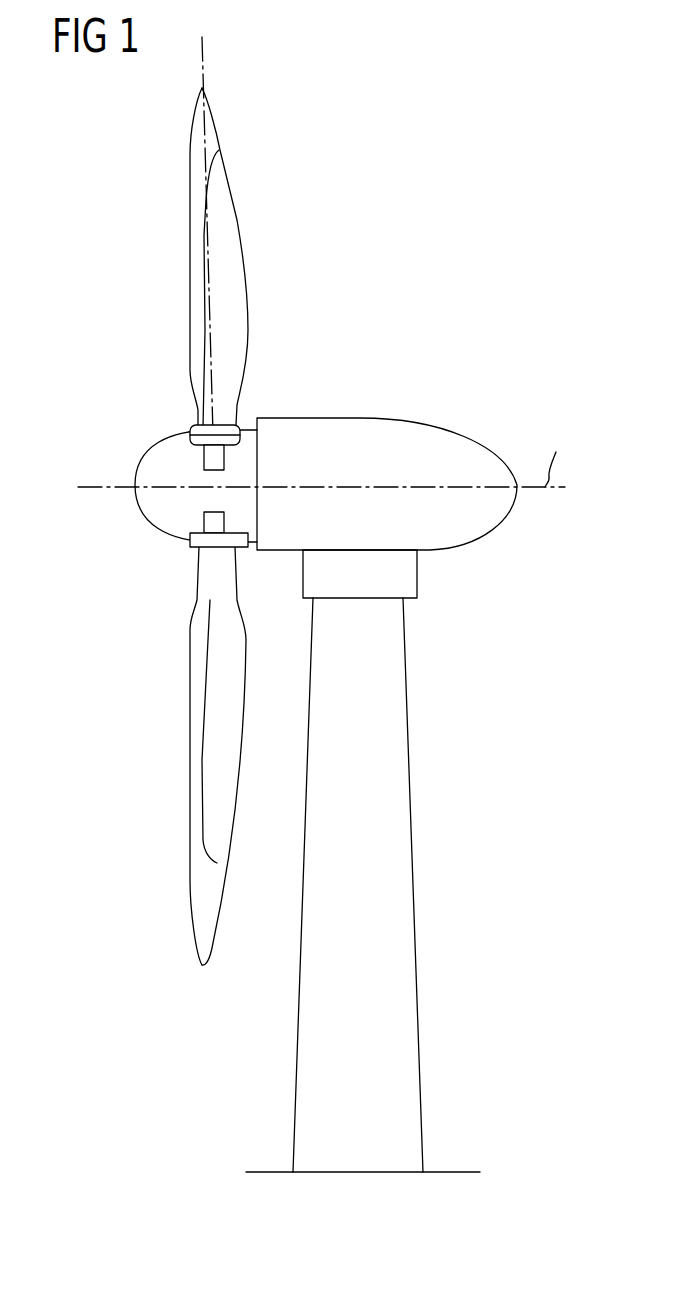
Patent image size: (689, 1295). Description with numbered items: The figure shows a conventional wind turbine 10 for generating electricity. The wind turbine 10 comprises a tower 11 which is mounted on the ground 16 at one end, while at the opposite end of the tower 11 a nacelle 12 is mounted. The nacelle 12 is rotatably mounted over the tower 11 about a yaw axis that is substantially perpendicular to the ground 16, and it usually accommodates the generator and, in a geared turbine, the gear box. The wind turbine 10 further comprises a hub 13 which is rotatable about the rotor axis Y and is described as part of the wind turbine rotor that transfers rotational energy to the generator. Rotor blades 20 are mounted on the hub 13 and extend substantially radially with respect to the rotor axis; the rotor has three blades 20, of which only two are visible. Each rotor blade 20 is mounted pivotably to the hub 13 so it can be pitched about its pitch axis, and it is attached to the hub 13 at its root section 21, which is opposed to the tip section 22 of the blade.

The wind turbine 10 is at (310, 604).
The tower 11 is at (405, 845).
The nacelle 12 is at (357, 418).
The hub 13 is at (118, 522).
The ground 16 is at (450, 1172).
The rotor blade 20 is at (190, 250).
The root section 21 is at (225, 427).
The tip section 22 is at (205, 88).